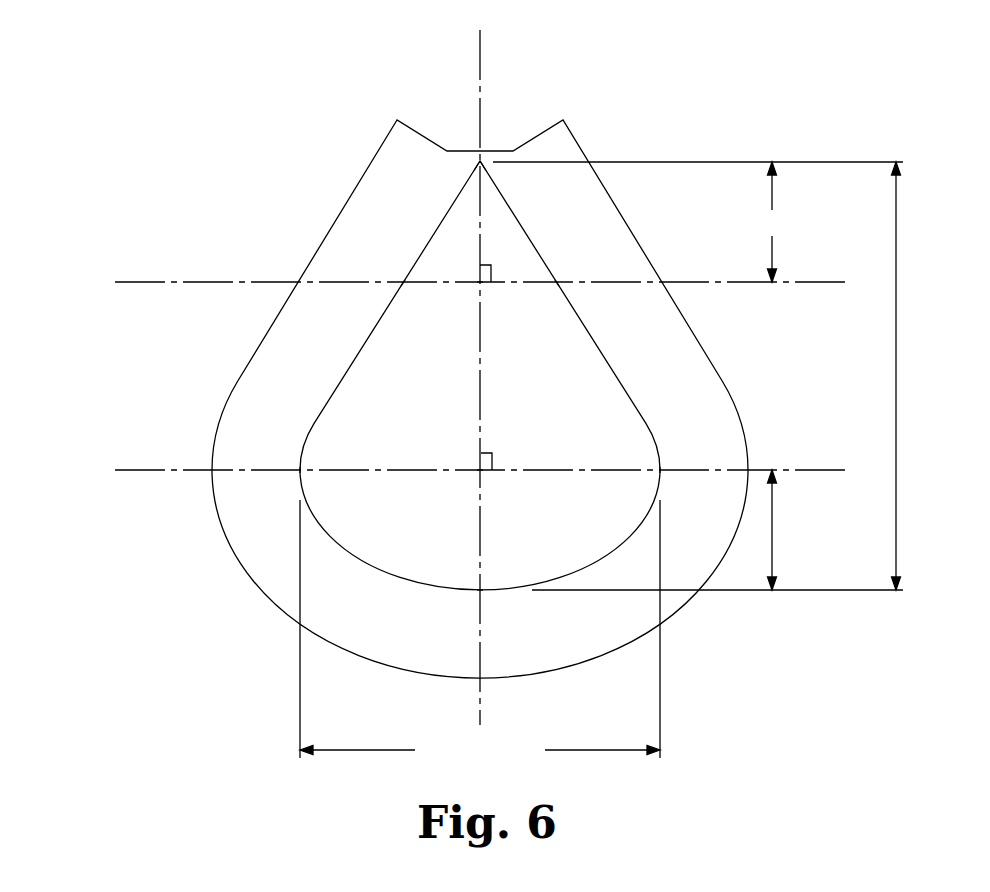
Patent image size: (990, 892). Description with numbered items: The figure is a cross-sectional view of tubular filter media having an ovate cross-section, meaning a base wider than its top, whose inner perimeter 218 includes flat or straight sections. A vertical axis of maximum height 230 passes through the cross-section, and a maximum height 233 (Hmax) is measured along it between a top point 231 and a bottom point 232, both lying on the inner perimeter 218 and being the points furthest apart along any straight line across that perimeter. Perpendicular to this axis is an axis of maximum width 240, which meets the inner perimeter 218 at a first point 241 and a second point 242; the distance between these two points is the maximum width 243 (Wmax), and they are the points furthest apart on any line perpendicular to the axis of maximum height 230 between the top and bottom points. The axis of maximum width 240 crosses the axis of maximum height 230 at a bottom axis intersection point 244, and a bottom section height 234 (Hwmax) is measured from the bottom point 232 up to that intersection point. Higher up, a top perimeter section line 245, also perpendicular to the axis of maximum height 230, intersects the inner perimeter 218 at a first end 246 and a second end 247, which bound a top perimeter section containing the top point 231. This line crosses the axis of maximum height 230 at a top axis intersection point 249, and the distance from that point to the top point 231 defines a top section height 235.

The inner perimeter 218 is at (616, 378).
The axis of maximum height 230 is at (480, 53).
The top point 231 is at (476, 168).
The bottom point 232 is at (479, 589).
The maximum height 233 is at (912, 376).
The bottom section height 234 is at (822, 530).
The top section height 235 is at (772, 222).
The axis of maximum width 240 is at (155, 471).
The first point 241 is at (302, 466).
The second point 242 is at (658, 466).
The maximum width 243 is at (480, 750).
The bottom axis intersection point 244 is at (479, 467).
The top perimeter section line 245 is at (150, 283).
The first end 246 is at (403, 284).
The second end 247 is at (557, 283).
The top axis intersection point 249 is at (480, 283).